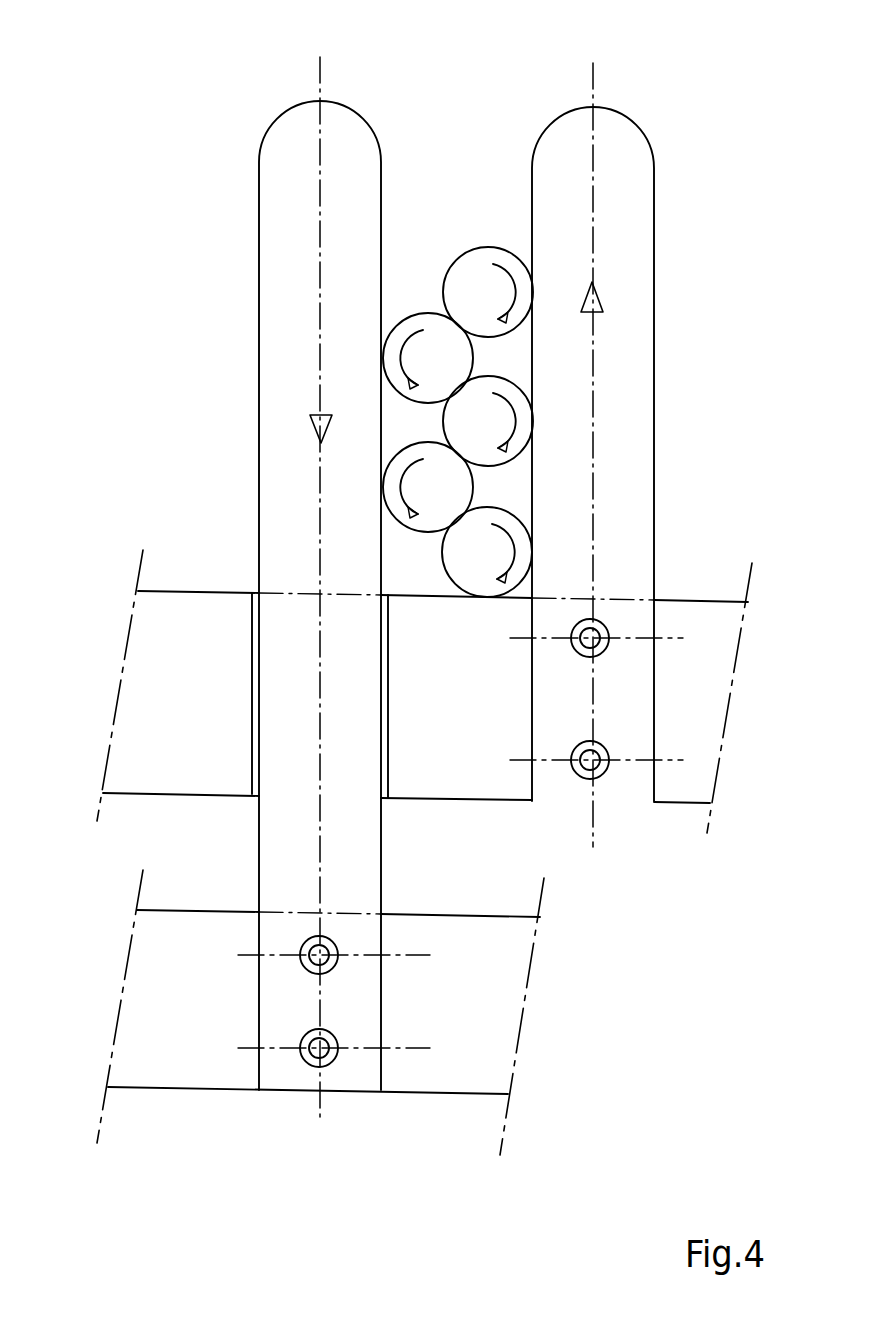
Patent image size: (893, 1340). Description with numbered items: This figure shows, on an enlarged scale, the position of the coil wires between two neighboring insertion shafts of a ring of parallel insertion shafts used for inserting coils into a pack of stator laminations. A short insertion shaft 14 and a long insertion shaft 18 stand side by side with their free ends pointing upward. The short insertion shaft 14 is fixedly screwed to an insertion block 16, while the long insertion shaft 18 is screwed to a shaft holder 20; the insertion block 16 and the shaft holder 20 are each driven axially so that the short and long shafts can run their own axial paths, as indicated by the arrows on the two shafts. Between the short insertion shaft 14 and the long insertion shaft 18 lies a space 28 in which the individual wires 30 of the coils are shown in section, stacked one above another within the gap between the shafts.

The short insertion shaft 14 is at (625, 534).
The insertion block 16 is at (673, 703).
The long insertion shaft 18 is at (285, 463).
The shaft holder 20 is at (172, 1012).
The space 28 is at (632, 84).
The individual wires 30 is at (478, 283).